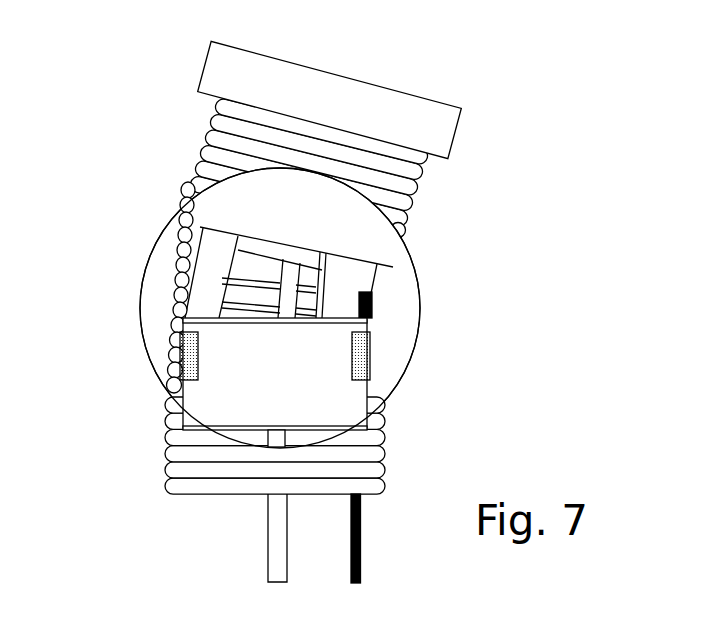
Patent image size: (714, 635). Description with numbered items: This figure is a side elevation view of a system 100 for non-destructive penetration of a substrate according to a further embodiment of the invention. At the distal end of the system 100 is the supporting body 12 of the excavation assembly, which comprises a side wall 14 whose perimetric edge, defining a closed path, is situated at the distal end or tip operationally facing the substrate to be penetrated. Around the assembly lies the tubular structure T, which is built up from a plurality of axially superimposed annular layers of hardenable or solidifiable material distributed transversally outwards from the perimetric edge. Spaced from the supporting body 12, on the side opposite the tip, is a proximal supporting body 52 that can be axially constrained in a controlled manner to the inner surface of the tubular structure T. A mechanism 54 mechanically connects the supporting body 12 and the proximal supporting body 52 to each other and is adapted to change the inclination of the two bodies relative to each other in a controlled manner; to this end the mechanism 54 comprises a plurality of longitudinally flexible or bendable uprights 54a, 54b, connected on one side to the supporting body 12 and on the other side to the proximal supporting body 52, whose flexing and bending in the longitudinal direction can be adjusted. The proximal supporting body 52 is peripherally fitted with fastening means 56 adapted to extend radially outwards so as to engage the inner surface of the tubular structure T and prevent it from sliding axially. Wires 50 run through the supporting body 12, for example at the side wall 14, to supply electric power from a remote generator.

The system 100 is at (497, 95).
The supporting body 12 is at (397, 257).
The side wall 14 is at (307, 221).
The wires 50 is at (361, 540).
The proximal supporting body 52 is at (290, 386).
The mechanism 54 is at (325, 272).
The upright 54a is at (207, 288).
The upright 54b is at (385, 307).
The fastening means 56 is at (186, 362).
The tubular structure T is at (165, 463).